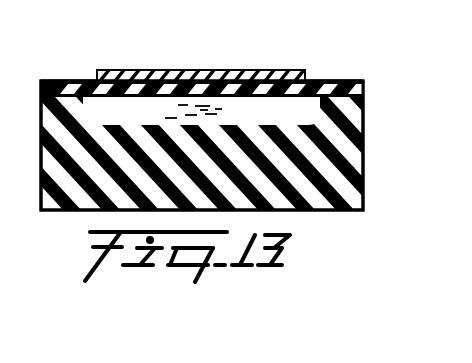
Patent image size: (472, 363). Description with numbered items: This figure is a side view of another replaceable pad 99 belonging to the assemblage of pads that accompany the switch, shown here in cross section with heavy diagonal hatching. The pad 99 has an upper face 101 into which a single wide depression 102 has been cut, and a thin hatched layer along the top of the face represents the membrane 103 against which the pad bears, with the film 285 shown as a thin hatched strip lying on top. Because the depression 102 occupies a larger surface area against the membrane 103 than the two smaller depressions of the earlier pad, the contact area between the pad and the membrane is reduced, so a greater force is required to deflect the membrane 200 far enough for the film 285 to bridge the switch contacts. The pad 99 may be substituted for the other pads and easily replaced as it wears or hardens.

The pad 99 is at (350, 148).
The upper face 101 is at (73, 81).
The depression 102 is at (222, 110).
The membrane 103 is at (83, 80).
The membrane 200 is at (364, 81).
The film 285 is at (278, 72).